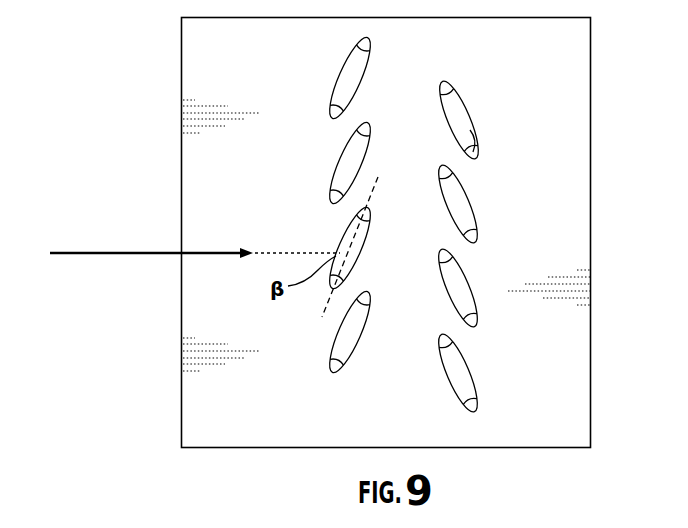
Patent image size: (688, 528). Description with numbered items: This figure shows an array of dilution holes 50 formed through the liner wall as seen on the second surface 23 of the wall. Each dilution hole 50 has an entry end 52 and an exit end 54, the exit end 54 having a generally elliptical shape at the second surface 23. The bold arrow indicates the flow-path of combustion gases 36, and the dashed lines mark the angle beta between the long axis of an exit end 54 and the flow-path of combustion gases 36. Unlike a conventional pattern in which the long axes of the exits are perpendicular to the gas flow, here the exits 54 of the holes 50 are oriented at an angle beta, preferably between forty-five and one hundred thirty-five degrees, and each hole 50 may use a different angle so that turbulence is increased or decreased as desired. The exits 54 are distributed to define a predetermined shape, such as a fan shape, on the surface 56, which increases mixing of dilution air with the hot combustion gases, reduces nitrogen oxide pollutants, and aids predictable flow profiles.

The second surface 23 is at (545, 352).
The flow-path of combustion gases 36 is at (84, 255).
The dilution holes 50 is at (405, 224).
The entry end 52 is at (472, 132).
The exit end 54 is at (459, 119).
The surface 56 is at (450, 93).